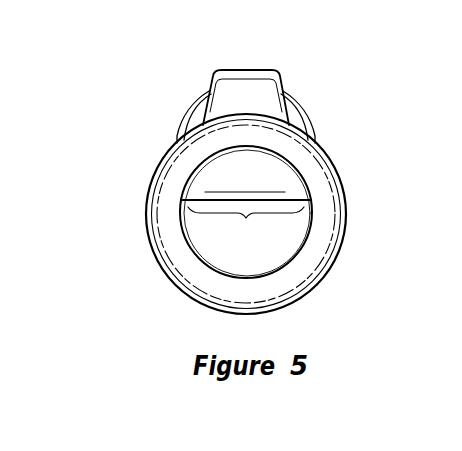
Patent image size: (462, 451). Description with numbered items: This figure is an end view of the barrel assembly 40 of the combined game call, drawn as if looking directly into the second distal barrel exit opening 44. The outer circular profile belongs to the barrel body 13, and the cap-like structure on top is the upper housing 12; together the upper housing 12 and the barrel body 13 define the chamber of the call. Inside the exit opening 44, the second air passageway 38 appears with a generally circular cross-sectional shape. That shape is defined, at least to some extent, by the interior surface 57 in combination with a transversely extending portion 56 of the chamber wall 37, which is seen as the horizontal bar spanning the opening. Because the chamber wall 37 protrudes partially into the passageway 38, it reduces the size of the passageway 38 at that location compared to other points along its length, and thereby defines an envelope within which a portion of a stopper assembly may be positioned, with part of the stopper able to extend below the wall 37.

The upper housing 12 is at (300, 73).
The barrel body 13 is at (341, 254).
The chamber wall 37 is at (264, 182).
The second air passageway 38 is at (256, 266).
The barrel assembly 40 is at (168, 97).
The second distal barrel exit opening 44 is at (285, 272).
The transversely extending portion 56 is at (246, 225).
The interior surface 57 is at (185, 248).